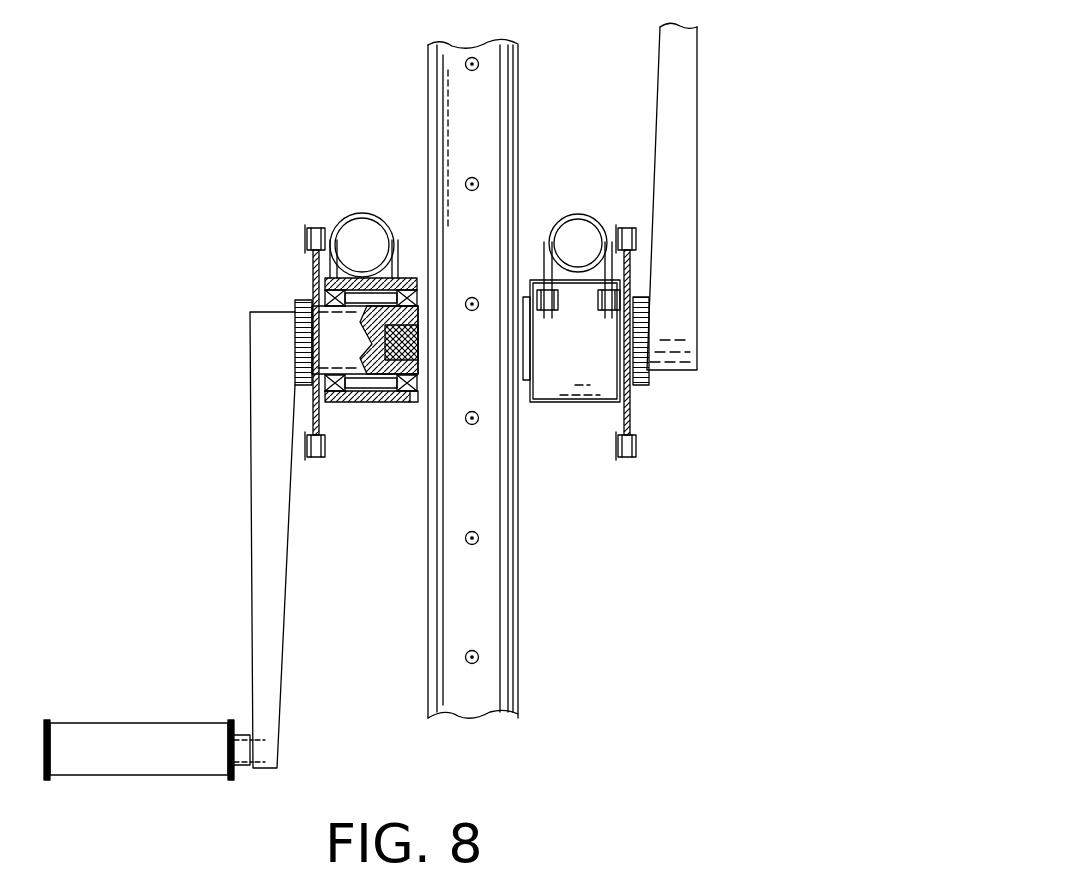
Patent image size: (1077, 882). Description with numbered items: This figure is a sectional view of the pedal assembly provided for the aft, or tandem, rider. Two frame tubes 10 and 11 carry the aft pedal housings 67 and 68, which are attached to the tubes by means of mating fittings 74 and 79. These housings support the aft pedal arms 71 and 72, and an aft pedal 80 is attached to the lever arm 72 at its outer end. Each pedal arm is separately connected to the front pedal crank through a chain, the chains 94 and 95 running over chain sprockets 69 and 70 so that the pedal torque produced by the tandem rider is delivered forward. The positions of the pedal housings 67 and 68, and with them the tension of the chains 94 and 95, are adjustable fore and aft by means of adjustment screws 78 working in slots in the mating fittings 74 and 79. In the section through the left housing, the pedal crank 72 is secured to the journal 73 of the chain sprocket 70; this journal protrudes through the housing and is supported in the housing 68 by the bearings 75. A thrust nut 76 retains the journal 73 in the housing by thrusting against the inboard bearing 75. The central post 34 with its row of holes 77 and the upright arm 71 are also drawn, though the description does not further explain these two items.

The post 34 is at (487, 583).
The holes 77 is at (482, 527).
The tube 10 is at (365, 214).
The tube 11 is at (580, 214).
The fitting 79 is at (572, 288).
The fitting 74 is at (405, 276).
The bearing 75 is at (408, 283).
The journal 73 is at (300, 303).
The pedal housing 68 is at (380, 403).
The thrust nut 76 is at (418, 395).
The chain sprocket 70 is at (312, 270).
The chain 95 is at (305, 240).
The pedal arm 72 is at (262, 440).
The aft pedal 80 is at (115, 722).
The adjustment screw 78 is at (545, 296).
The pedal housing 67 is at (590, 405).
The chain sprocket 69 is at (636, 412).
The chain 94 is at (640, 448).
The pedal arm 71 is at (685, 212).